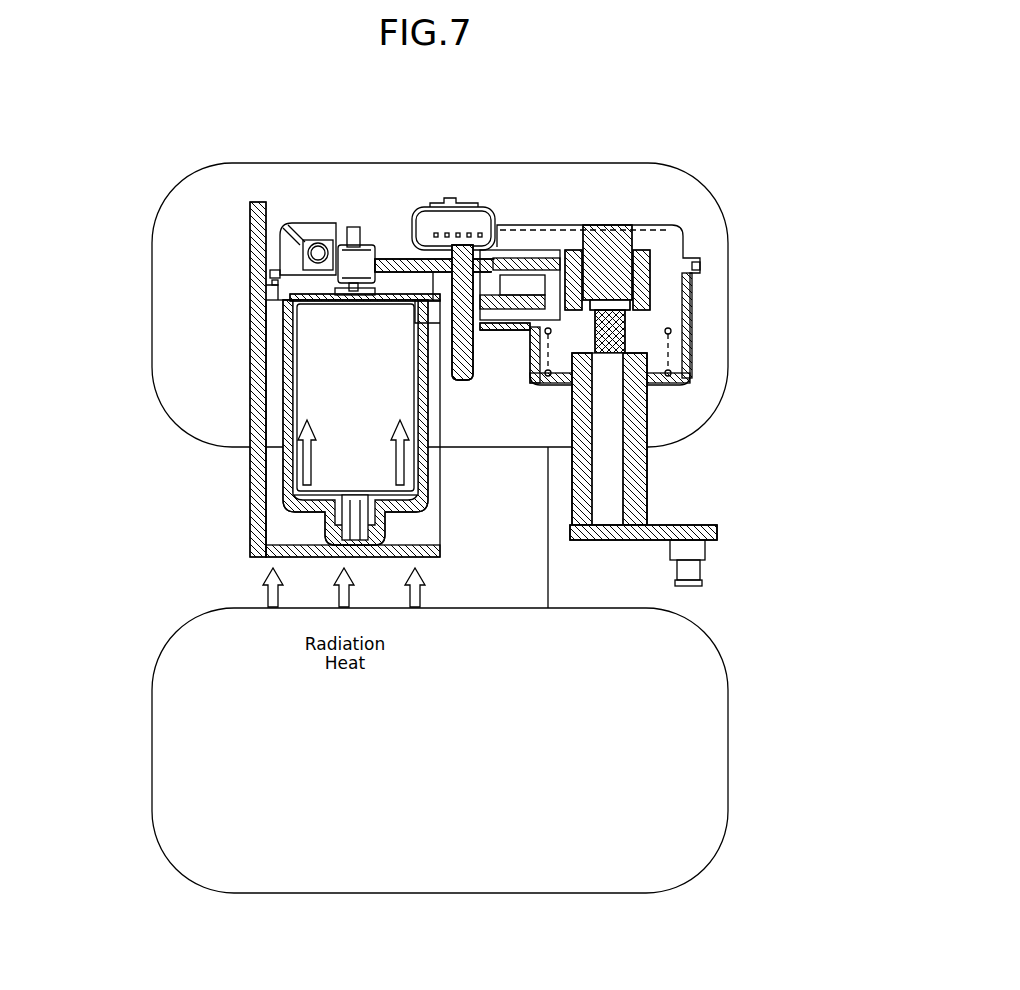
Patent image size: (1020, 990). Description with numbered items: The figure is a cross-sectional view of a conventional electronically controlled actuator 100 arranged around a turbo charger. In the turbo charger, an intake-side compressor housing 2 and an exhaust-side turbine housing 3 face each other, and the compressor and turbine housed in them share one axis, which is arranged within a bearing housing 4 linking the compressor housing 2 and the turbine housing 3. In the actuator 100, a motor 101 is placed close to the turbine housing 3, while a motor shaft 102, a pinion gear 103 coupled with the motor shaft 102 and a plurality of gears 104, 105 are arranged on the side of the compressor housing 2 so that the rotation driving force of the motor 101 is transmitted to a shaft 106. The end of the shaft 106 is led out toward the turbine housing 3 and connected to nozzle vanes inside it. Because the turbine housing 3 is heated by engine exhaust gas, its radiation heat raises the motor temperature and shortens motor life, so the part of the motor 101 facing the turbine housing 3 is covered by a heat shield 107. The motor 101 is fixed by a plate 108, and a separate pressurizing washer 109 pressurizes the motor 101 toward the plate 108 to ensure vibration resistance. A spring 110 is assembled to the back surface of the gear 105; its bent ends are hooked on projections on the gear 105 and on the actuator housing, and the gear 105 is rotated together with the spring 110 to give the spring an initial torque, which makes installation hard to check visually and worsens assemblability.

The compressor housing 2 is at (690, 173).
The turbine housing 3 is at (728, 772).
The bearing housing 4 is at (540, 583).
The electronically controlled actuator 100 is at (594, 225).
The motor 101 is at (328, 412).
The motor shaft 102 is at (278, 271).
The pinion gear 103 is at (331, 228).
The gear 104 is at (404, 233).
The gear 105 is at (522, 259).
The shaft 106 is at (613, 418).
The heat shield 107 is at (258, 202).
The plate 108 is at (273, 289).
The pressurizing washer 109 is at (290, 488).
The spring 110 is at (669, 338).